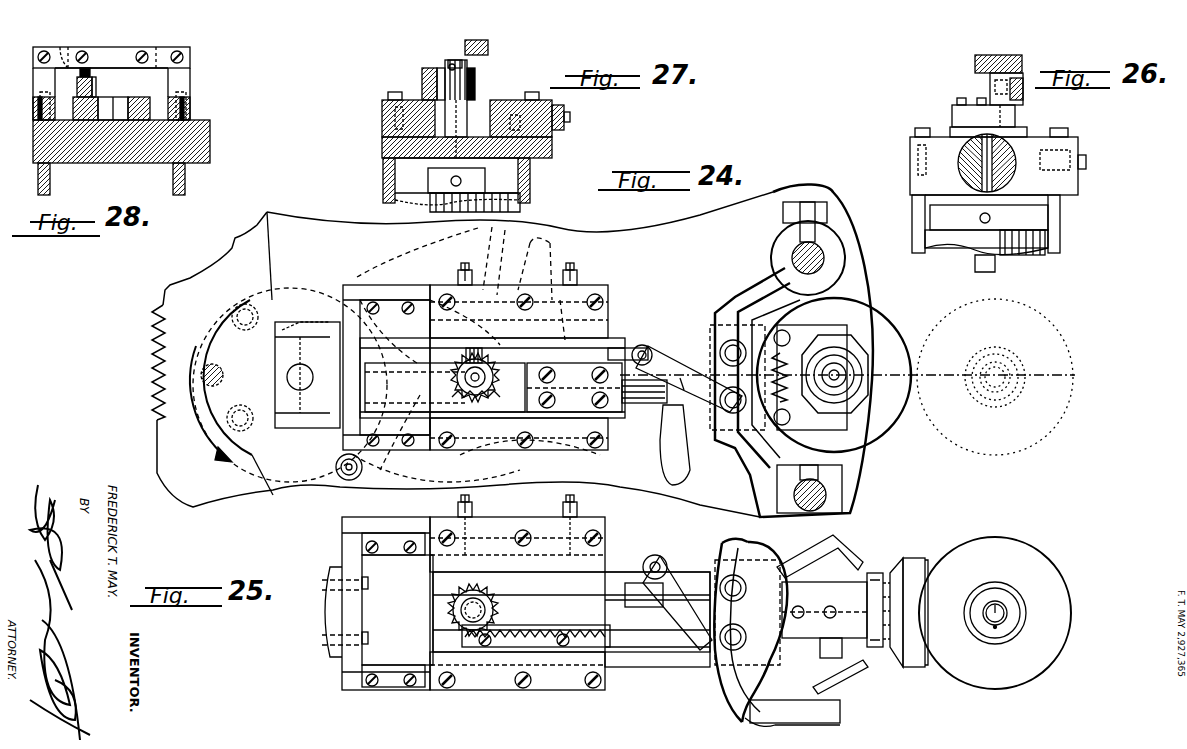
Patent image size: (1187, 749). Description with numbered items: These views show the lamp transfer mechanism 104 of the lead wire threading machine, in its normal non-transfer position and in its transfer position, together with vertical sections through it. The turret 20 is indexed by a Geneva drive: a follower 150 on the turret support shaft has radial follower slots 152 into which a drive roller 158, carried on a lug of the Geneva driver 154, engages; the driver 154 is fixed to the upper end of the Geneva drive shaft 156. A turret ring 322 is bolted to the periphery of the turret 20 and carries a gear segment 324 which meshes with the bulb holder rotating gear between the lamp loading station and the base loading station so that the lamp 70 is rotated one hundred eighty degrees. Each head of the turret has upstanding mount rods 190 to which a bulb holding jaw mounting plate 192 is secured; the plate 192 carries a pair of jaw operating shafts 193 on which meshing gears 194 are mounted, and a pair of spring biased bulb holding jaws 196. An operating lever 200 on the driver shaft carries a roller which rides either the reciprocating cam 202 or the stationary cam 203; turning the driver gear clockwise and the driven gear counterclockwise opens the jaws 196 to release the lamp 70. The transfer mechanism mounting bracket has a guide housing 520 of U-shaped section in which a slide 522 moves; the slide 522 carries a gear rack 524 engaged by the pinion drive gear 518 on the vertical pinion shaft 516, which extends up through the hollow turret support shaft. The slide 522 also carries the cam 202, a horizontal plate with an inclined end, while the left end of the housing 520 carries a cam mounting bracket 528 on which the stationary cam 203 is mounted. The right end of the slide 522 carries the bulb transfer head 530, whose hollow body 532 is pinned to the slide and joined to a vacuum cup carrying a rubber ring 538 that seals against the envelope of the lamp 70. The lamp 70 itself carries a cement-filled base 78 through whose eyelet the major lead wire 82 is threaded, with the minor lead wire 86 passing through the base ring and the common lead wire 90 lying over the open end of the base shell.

In FIG. 24, the turret 20 is at (855, 292).
In FIG. 24, the incandescent lamp 70 is at (945, 450).
In FIG. 25, the incandescent lamp 70 is at (1048, 660).
In FIG. 24, the base 78 is at (862, 368).
In FIG. 25, the base 78 is at (1030, 615).
In FIG. 25, the major filament lead wire 82 is at (1000, 600).
In FIG. 25, the minor filament lead wire 86 is at (997, 630).
In FIG. 25, the common lead wire 90 is at (965, 612).
In FIG. 24, the bulb transfer mechanism 104 is at (637, 280).
In FIG. 25, the bulb transfer mechanism 104 is at (640, 680).
In FIG. 24, the Geneva driven gear or maltese cross follower 150 is at (463, 250).
In FIG. 24, the radial follower slots 152 is at (540, 242).
In FIG. 24, the Geneva drive gear or driver 154 is at (215, 335).
In FIG. 24, the Geneva drive shaft 156 is at (258, 388).
In FIG. 24, the drive roller 158 is at (340, 478).
In FIG. 24, the mount rod 190 is at (825, 250).
In FIG. 25, the mount rod 190 is at (842, 712).
In FIG. 24, the bulb holding jaw mounting plate 192 is at (760, 300).
In FIG. 25, the bulb holding jaw mounting plate 192 is at (750, 630).
In FIG. 24, the bulb holding jaw operating shafts 193 is at (720, 340).
In FIG. 25, the bulb holding jaw operating shafts 193 is at (733, 612).
In FIG. 24, the meshing gears 194 is at (740, 440).
In FIG. 25, the meshing gears 194 is at (800, 593).
In FIG. 24, the spring biased bulb holding jaws 196 is at (850, 335).
In FIG. 25, the spring biased bulb holding jaws 196 is at (845, 552).
In FIG. 26, the operating lever 200 is at (975, 65).
In FIG. 24, the operating lever 200 is at (668, 355).
In FIG. 25, the operating lever 200 is at (680, 580).
In FIG. 27, the reciprocating bulb holder jaw opening cam 202 is at (488, 47).
In FIG. 26, the reciprocating bulb holder jaw opening cam 202 is at (988, 85).
In FIG. 24, the reciprocating bulb holder jaw opening cam 202 is at (637, 345).
In FIG. 25, the reciprocating bulb holder jaw opening cam 202 is at (633, 583).
In FIG. 28, the stationary bulb holder jaw opening cam 203 is at (62, 47).
In FIG. 24, the stationary bulb holder jaw opening cam 203 is at (322, 430).
In FIG. 25, the stationary bulb holder jaw opening cam 203 is at (330, 628).
In FIG. 24, the turret ring 322 is at (163, 460).
In FIG. 24, the gear segment 324 is at (150, 362).
In FIG. 27, the vertical pinion shaft 516 is at (473, 95).
In FIG. 26, the vertical pinion shaft 516 is at (998, 268).
In FIG. 24, the vertical pinion shaft 516 is at (482, 358).
In FIG. 25, the vertical pinion shaft 516 is at (452, 610).
In FIG. 27, the pinion drive gear 518 is at (448, 62).
In FIG. 24, the pinion drive gear 518 is at (457, 377).
In FIG. 25, the pinion drive gear 518 is at (455, 620).
In FIG. 28, the guide housing 520 is at (200, 152).
In FIG. 27, the guide housing 520 is at (383, 183).
In FIG. 26, the guide housing 520 is at (1060, 210).
In FIG. 24, the guide housing 520 is at (420, 285).
In FIG. 25, the guide housing 520 is at (356, 527).
In FIG. 28, the slide 522 is at (150, 95).
In FIG. 27, the slide 522 is at (384, 128).
In FIG. 26, the slide 522 is at (940, 162).
In FIG. 24, the slide 522 is at (345, 305).
In FIG. 25, the slide 522 is at (448, 640).
In FIG. 28, the gear rack 524 is at (96, 85).
In FIG. 27, the gear rack 524 is at (420, 76).
In FIG. 24, the gear rack 524 is at (445, 387).
In FIG. 25, the gear rack 524 is at (530, 640).
In FIG. 28, the cam mounting bracket 528 is at (186, 55).
In FIG. 24, the cam mounting bracket 528 is at (345, 300).
In FIG. 25, the cam mounting bracket 528 is at (352, 680).
In FIG. 25, the bulb transfer head 530 is at (928, 555).
In FIG. 24, the body 532 is at (660, 425).
In FIG. 25, the rubber ring 538 is at (925, 580).